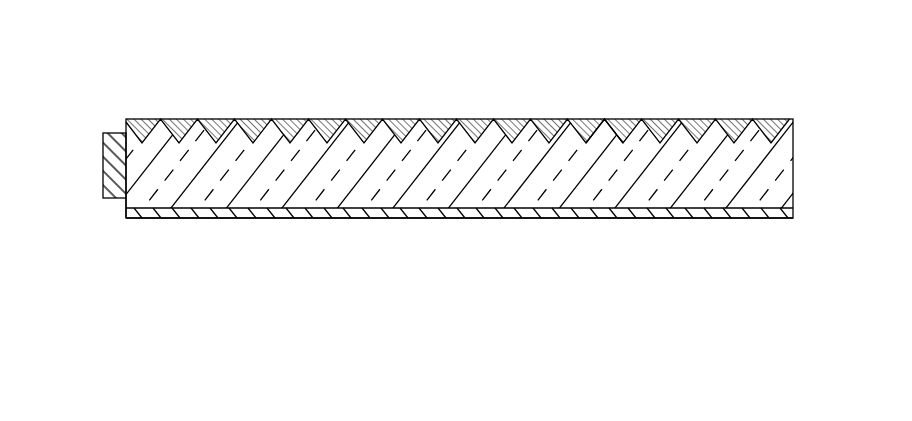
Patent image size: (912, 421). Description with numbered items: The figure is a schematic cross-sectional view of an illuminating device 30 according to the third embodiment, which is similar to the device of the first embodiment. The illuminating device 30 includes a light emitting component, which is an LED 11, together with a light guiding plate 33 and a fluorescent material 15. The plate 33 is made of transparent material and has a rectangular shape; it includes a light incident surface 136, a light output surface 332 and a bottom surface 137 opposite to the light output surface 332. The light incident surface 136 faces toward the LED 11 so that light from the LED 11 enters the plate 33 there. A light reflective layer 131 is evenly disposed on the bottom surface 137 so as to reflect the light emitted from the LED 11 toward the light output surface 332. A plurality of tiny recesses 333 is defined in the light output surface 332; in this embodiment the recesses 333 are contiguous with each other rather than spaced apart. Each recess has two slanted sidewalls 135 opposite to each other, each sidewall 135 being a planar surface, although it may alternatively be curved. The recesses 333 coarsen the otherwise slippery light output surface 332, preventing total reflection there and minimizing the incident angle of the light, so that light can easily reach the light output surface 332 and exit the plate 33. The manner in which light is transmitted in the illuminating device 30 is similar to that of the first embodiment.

The illuminating device 30 is at (352, 95).
The light guiding plate 33 is at (780, 165).
The light output surface 332 is at (755, 124).
The recesses 333 is at (612, 119).
The slanted sidewalls 135 is at (637, 120).
The fluorescent material 15 is at (626, 130).
The light reflective layer 131 is at (810, 210).
The bottom surface 137 is at (298, 209).
The light incident surface 136 is at (125, 204).
The LED 11 is at (105, 172).